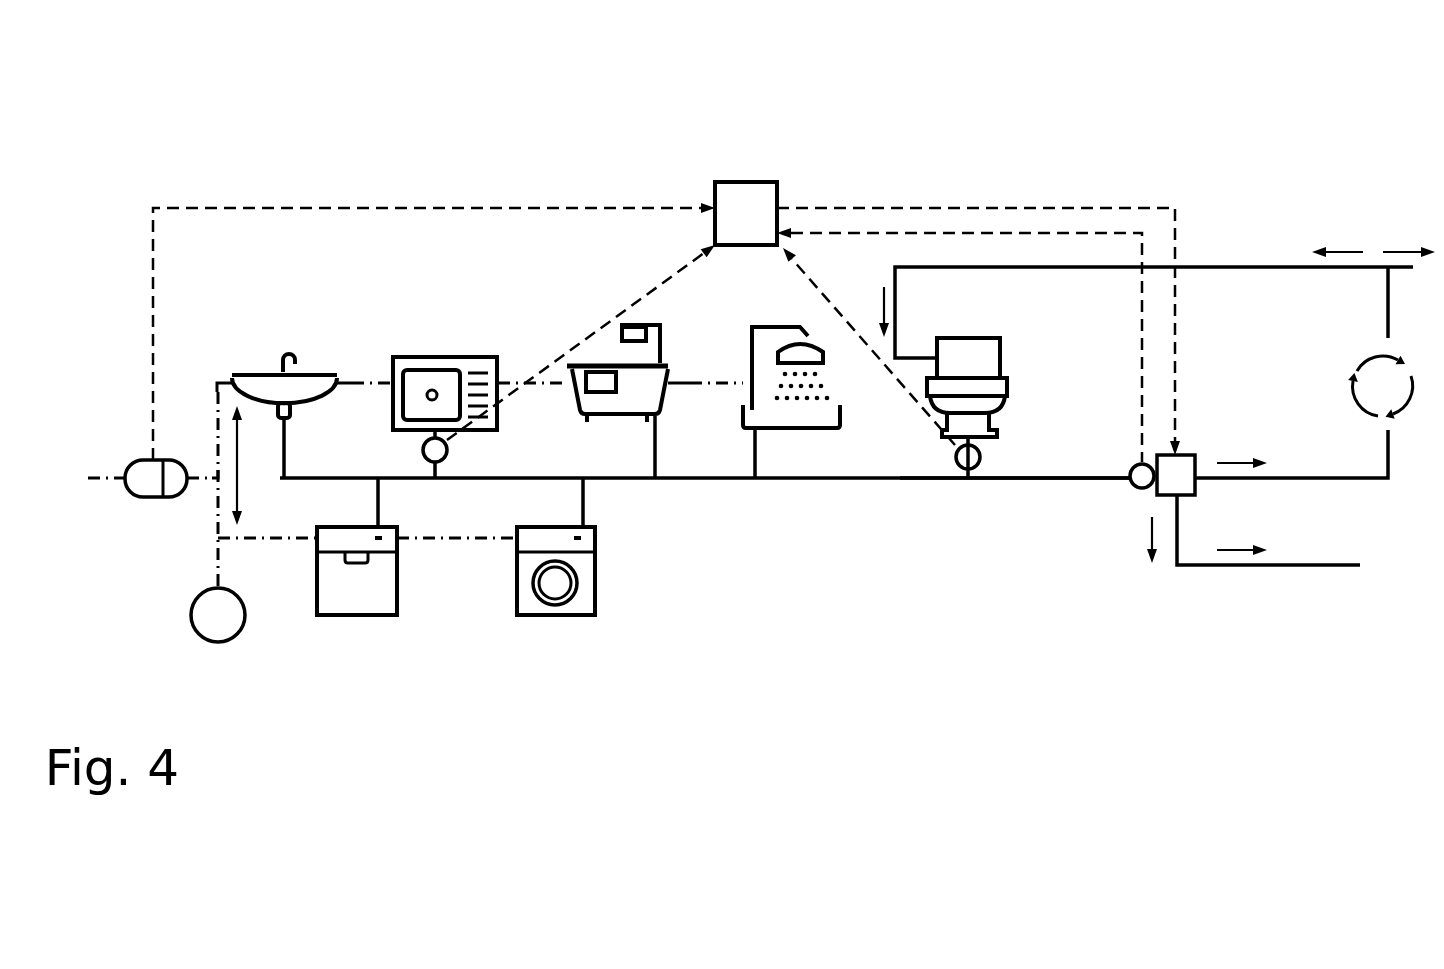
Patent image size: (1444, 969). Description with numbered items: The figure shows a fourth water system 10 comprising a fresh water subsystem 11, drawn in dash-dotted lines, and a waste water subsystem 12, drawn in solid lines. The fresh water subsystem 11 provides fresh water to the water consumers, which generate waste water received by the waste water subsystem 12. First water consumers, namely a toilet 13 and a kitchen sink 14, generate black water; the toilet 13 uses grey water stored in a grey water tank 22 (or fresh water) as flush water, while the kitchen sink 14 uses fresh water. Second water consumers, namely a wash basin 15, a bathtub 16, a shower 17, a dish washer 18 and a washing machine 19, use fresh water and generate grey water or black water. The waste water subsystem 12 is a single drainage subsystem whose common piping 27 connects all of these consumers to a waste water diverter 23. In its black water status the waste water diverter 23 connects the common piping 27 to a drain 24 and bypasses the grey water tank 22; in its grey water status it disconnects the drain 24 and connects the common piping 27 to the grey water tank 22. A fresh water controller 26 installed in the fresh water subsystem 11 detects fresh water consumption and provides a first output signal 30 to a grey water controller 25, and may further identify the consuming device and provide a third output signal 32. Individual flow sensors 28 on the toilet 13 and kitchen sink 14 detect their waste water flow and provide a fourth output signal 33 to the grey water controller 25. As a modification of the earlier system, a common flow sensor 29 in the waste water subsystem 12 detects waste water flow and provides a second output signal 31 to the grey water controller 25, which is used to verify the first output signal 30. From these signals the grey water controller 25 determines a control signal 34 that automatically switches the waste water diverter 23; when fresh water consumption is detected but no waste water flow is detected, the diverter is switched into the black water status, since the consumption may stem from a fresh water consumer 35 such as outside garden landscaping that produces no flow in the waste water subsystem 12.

The water system 10 is at (1293, 103).
The fresh water subsystem 11 is at (186, 570).
The waste water subsystem 12 is at (1005, 518).
The toilet 13 is at (1007, 385).
The kitchen sink 14 is at (470, 358).
The wash basin 15 is at (315, 372).
The bathtub 16 is at (662, 362).
The shower 17 is at (842, 410).
The dish washer 18 is at (358, 616).
The washing machine 19 is at (568, 616).
The grey water tank 22 is at (1352, 343).
The waste water diverter 23 is at (1190, 455).
The drain 24 is at (1310, 568).
The grey water controller 25 is at (745, 182).
The fresh water controller 26 is at (140, 460).
The common piping 27 is at (795, 481).
The individual flow sensor 28 is at (423, 452).
The common flow sensor 29 is at (1138, 488).
The first output signal 30 is at (434, 298).
The second output signal 31 is at (985, 232).
The third output signal 32 is at (435, 206).
The fourth output signal 33 is at (672, 277).
The control signal 34 is at (1093, 207).
The fresh water consumer 35 is at (218, 644).